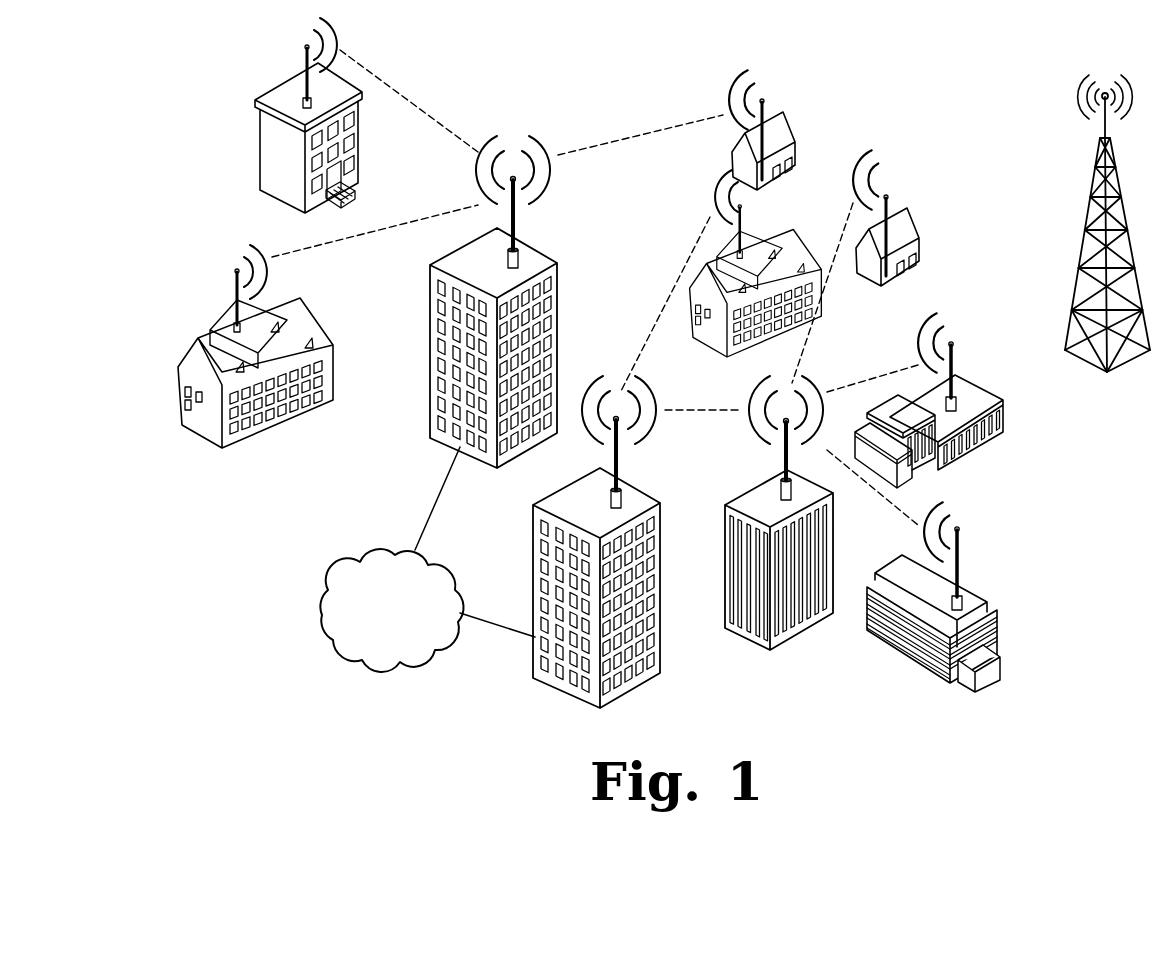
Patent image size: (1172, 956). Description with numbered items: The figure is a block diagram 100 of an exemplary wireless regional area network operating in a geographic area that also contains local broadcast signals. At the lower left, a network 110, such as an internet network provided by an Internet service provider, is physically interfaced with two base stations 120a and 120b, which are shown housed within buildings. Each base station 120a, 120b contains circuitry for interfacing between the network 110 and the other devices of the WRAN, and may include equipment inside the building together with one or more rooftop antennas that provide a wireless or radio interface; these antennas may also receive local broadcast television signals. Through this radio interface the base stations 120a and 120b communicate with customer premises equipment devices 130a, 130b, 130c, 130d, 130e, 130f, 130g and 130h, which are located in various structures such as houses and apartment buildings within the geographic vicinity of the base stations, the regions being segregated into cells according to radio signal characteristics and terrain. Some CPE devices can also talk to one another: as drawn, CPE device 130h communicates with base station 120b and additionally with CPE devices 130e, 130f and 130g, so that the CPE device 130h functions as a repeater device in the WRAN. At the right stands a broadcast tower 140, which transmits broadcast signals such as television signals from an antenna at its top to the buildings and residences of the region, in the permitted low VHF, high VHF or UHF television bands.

The block diagram 100 is at (927, 103).
The network 110 is at (316, 631).
The base station 120a is at (423, 406).
The base station 120b is at (521, 678).
The customer premises equipment (CPE) device 130a is at (190, 348).
The customer premises equipment (CPE) device 130b is at (268, 91).
The customer premises equipment (CPE) device 130c is at (780, 120).
The customer premises equipment (CPE) device 130d is at (787, 224).
The customer premises equipment (CPE) device 130e is at (890, 238).
The customer premises equipment (CPE) device 130f is at (965, 382).
The customer premises equipment (CPE) device 130g is at (968, 592).
The customer premises equipment (CPE) device 130h is at (787, 640).
The broadcast tower 140 is at (1085, 366).